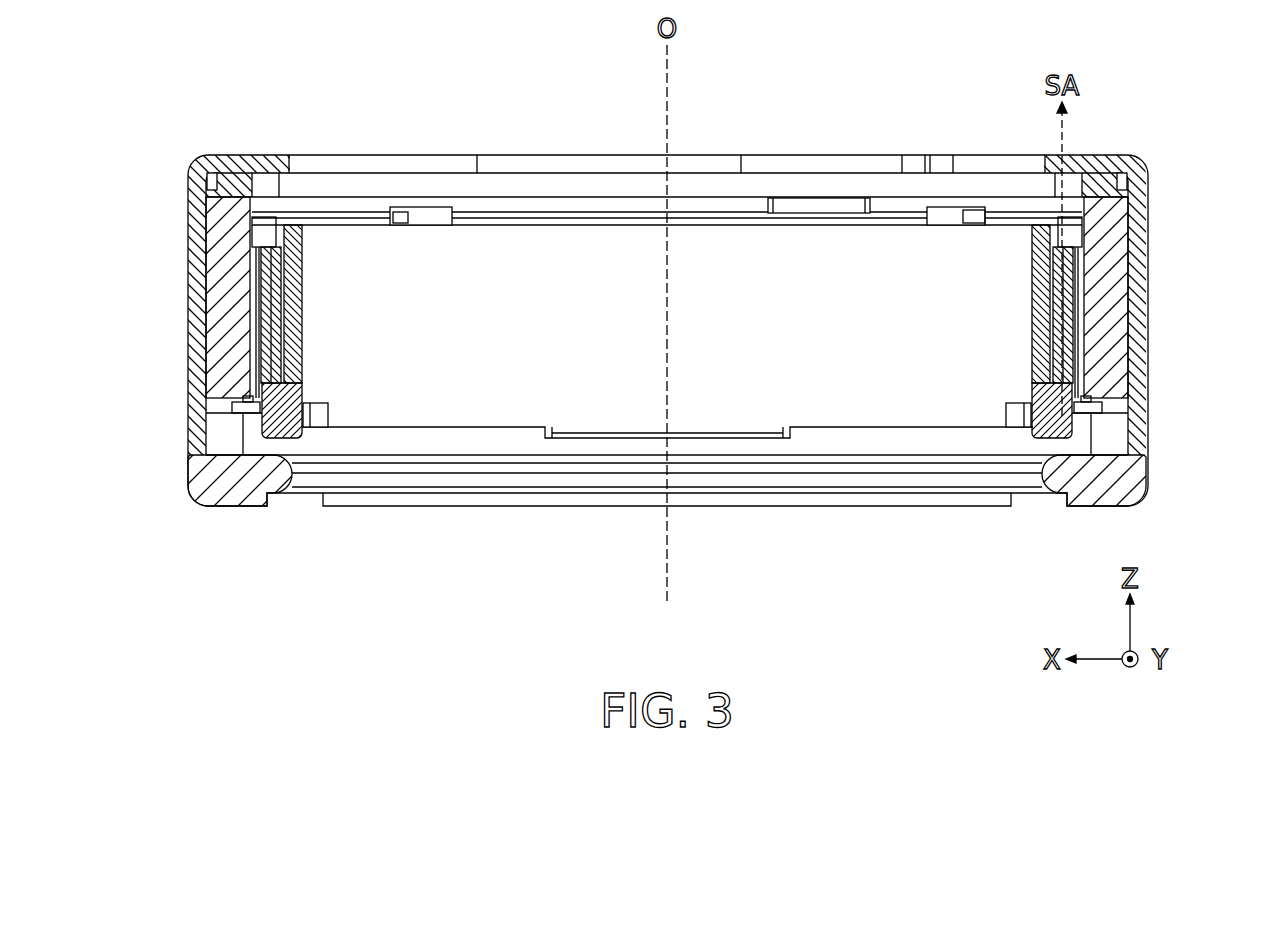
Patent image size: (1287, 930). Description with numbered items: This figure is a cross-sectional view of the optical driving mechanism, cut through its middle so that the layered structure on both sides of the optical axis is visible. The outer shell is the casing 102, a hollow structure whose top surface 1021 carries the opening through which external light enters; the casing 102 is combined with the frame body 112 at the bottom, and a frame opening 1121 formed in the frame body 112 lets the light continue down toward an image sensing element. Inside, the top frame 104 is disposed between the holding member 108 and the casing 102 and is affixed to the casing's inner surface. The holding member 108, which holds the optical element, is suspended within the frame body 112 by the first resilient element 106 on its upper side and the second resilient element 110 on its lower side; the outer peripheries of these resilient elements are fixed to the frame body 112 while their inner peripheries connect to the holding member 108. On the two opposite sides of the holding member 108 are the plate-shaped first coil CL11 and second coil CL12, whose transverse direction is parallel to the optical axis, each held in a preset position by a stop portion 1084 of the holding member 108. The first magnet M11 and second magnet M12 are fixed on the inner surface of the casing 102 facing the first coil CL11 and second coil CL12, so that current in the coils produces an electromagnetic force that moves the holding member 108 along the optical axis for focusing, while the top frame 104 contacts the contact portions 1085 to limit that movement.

The casing 102 is at (196, 232).
The top surface 1021 is at (420, 160).
The top frame 104 is at (222, 183).
The first resilient element 106 is at (268, 216).
The holding member 108 is at (903, 268).
The stop portion 1084 is at (285, 430).
The contact portion 1085 is at (815, 205).
The second resilient element 110 is at (228, 410).
The frame body 112 is at (236, 493).
The frame opening 1121 is at (437, 480).
The first magnet M11 is at (215, 272).
The second magnet M12 is at (1115, 258).
The first coil CL11 is at (272, 352).
The second coil CL12 is at (1065, 352).